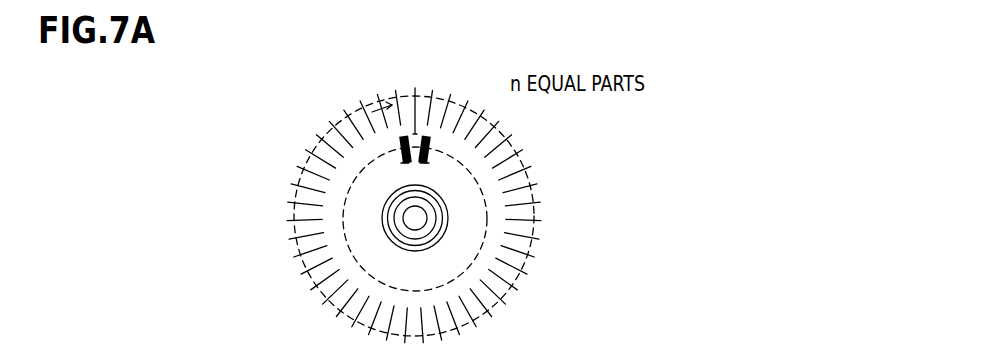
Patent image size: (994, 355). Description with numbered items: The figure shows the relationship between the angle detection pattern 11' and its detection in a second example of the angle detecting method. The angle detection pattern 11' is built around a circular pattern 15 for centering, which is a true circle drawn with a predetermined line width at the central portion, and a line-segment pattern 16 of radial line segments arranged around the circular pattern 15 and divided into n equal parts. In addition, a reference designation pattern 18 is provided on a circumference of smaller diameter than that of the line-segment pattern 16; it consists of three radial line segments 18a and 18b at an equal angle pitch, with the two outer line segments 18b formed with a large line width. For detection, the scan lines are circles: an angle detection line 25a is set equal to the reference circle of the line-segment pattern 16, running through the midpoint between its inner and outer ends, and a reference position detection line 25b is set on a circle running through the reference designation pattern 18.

The angle detection pattern 11' is at (398, 77).
The circular pattern 15 is at (435, 245).
The line-segment pattern 16 is at (468, 102).
The reference designation pattern 18 is at (392, 138).
The line segment 18a is at (413, 132).
The line segments 18b is at (398, 148).
The angle detection line 25a is at (532, 240).
The reference position detection line 25b is at (347, 252).